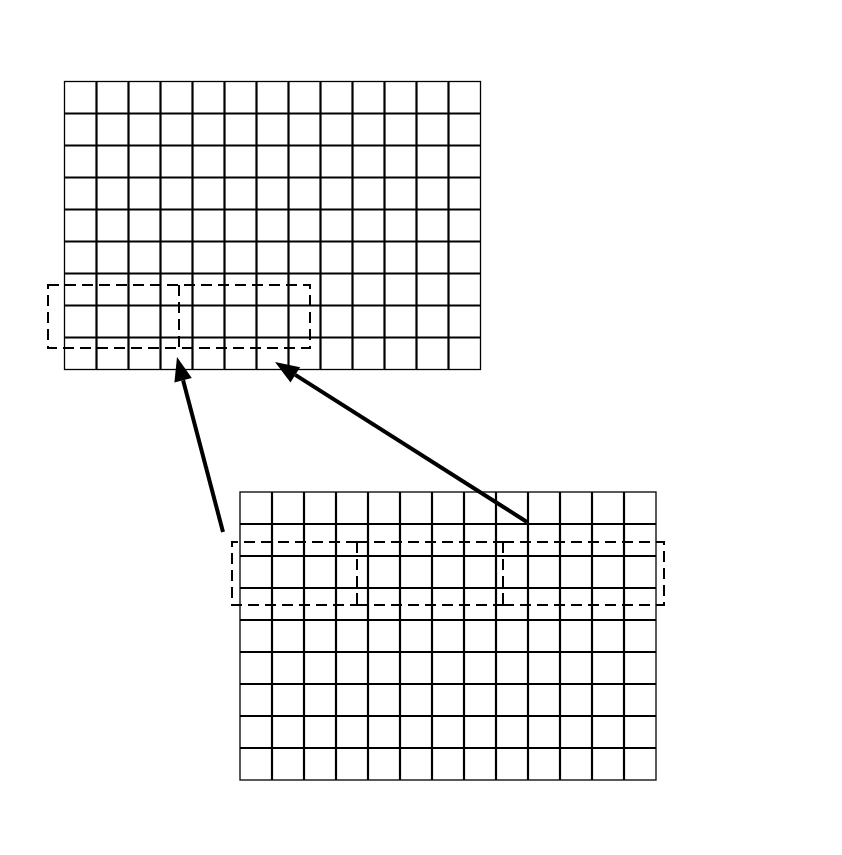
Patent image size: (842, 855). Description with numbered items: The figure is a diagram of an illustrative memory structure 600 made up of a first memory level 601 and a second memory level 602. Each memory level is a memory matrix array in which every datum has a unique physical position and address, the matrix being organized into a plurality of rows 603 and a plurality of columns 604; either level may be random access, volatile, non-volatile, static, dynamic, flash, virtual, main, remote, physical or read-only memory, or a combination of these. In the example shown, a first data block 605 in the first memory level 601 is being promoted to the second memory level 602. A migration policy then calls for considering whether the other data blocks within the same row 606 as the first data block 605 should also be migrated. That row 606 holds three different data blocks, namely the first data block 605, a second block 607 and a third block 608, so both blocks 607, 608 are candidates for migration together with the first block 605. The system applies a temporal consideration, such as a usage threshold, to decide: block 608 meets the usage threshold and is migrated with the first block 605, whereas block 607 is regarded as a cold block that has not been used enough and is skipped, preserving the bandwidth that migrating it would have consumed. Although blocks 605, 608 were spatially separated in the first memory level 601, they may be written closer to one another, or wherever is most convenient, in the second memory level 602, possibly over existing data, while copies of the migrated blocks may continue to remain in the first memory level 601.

The memory structure 600 is at (618, 192).
The first memory level 601 is at (655, 509).
The second memory level 602 is at (480, 131).
The rows 603 is at (496, 332).
The columns 604 is at (110, 63).
The first data block 605 is at (232, 590).
The row 606 is at (177, 552).
The data block 607 is at (463, 605).
The data block 608 is at (664, 583).